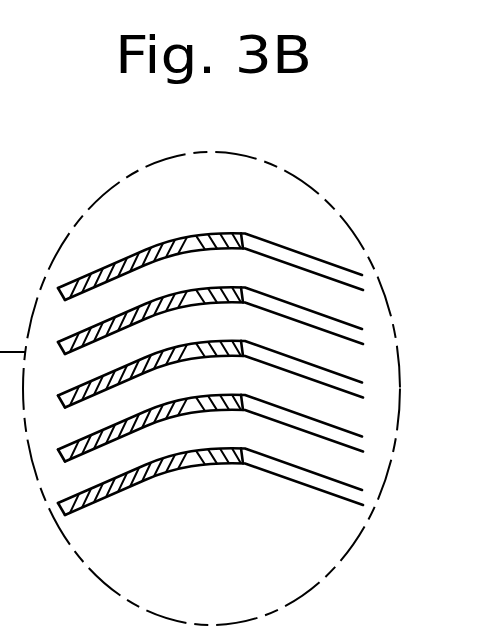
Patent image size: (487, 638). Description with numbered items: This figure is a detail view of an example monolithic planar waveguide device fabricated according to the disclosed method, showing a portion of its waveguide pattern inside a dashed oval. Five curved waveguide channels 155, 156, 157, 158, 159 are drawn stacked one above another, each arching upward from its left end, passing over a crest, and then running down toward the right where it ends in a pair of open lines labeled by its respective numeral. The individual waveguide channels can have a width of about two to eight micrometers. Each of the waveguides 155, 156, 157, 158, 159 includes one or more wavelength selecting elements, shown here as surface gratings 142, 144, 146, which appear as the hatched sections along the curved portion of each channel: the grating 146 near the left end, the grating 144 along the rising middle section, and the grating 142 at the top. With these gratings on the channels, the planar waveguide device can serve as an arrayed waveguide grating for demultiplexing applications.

The surface grating 142 is at (216, 232).
The surface grating 144 is at (163, 246).
The surface grating 146 is at (87, 276).
The waveguide channel 155 is at (363, 280).
The waveguide channel 156 is at (363, 336).
The waveguide channel 157 is at (363, 388).
The waveguide channel 158 is at (363, 442).
The waveguide channel 159 is at (363, 497).